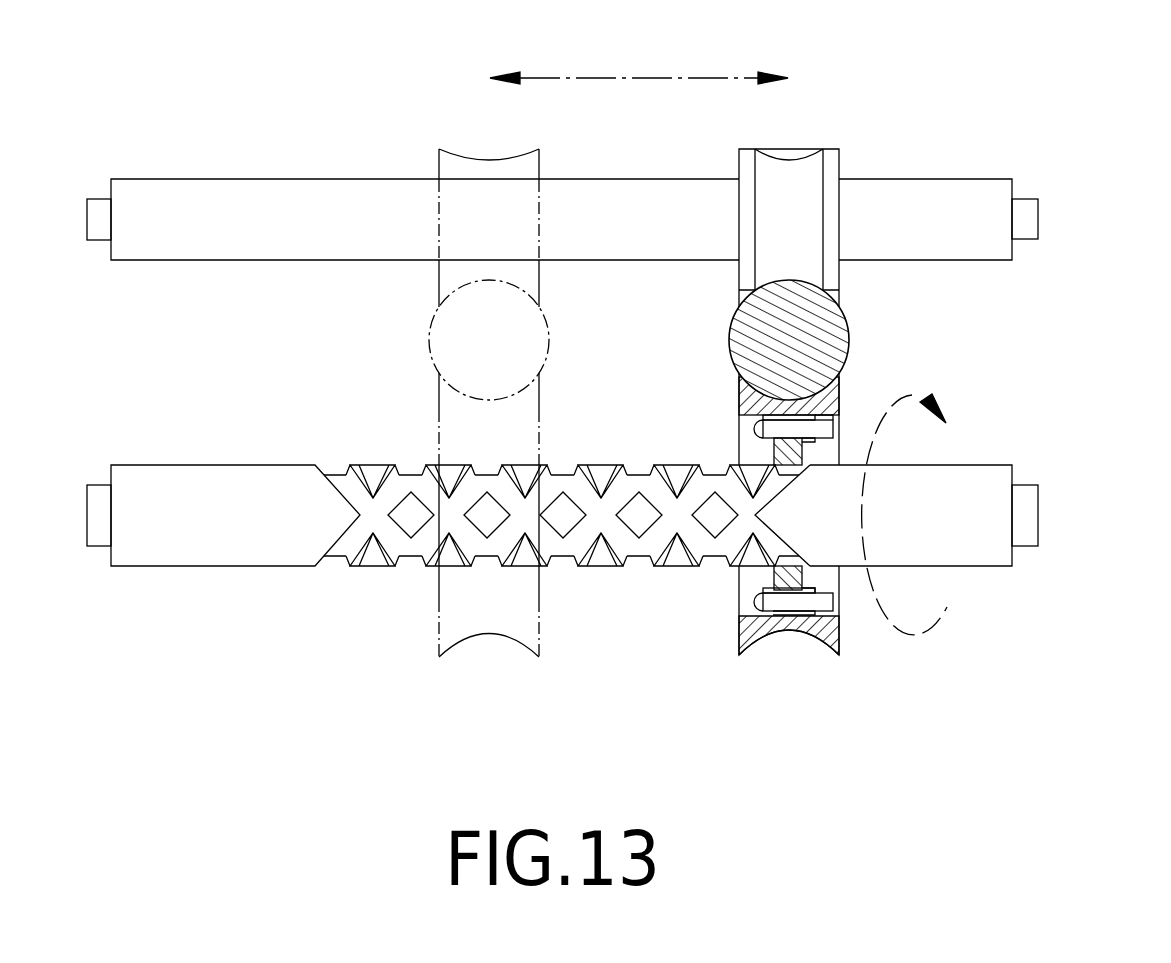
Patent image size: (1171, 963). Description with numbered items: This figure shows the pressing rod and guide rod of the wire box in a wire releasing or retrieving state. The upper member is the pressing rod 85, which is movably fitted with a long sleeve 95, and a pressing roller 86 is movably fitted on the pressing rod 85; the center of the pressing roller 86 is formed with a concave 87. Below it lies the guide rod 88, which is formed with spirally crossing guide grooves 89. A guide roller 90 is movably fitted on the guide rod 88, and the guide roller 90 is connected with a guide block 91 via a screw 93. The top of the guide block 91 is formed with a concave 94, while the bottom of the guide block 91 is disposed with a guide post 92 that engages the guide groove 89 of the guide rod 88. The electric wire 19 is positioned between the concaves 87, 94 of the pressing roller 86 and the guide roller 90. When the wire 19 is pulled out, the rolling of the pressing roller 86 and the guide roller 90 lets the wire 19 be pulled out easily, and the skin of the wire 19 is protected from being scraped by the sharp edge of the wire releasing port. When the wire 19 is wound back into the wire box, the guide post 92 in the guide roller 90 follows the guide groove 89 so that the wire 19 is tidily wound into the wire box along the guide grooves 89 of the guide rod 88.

The electric wire 19 is at (828, 324).
The pressing rod 85 is at (1023, 227).
The pressing roller 86 is at (833, 165).
The concave 87 is at (792, 155).
The guide rod 88 is at (953, 478).
The guide grooves 89 is at (407, 475).
The guide roller 90 is at (748, 443).
The guide block 91 is at (745, 637).
The guide post 92 is at (767, 573).
The screw 93 is at (833, 603).
The concave 94 is at (783, 632).
The long sleeve 95 is at (930, 200).